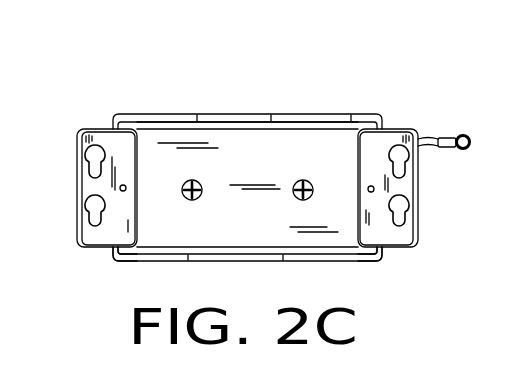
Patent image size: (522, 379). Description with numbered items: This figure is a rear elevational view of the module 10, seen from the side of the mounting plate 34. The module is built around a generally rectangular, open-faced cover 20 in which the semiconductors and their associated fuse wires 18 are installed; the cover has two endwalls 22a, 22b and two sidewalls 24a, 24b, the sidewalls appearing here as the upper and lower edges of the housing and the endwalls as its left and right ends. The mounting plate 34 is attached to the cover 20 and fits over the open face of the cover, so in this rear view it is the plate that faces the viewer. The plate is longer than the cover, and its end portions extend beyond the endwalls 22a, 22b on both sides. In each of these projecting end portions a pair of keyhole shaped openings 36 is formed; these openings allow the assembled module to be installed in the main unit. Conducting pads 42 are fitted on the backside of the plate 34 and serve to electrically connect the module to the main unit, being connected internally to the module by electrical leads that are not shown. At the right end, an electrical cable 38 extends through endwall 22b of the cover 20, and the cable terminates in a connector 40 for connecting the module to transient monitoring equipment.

The device assembly 10 is at (178, 80).
The fuse wires 18 is at (515, 36).
The cover 20 is at (143, 100).
The endwall 22a is at (113, 258).
The endwall 22b is at (383, 261).
The sidewall 24a is at (330, 262).
The sidewall 24b is at (239, 115).
The mounting plate 34 is at (322, 121).
The keyhole shaped openings 36 is at (89, 150).
The electrical cable 38 is at (440, 138).
The connector 40 is at (469, 134).
The conducting pads 42 is at (118, 143).